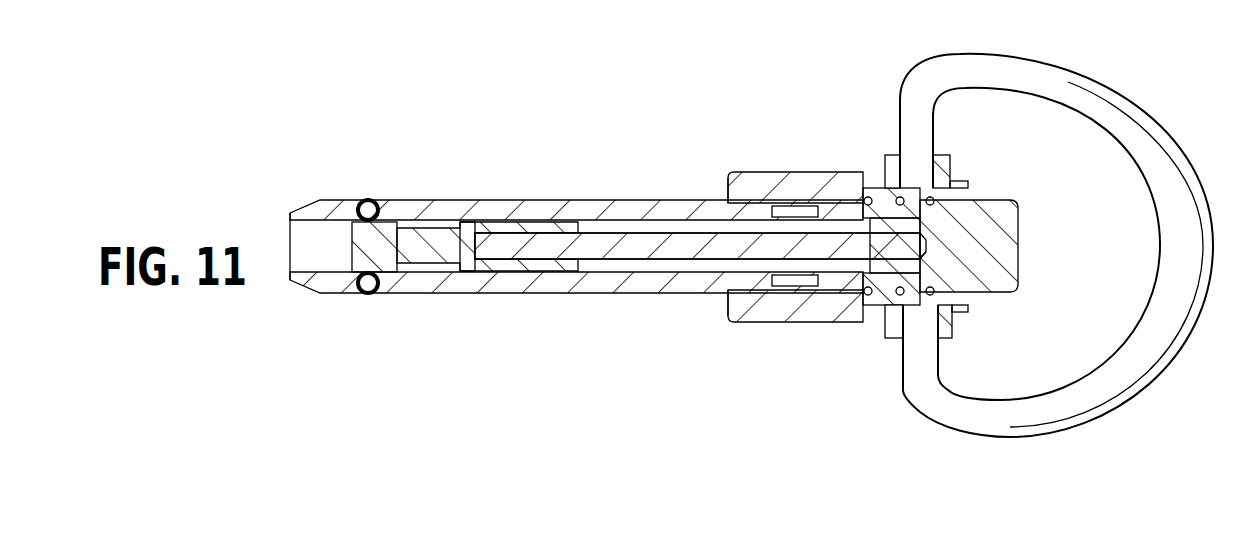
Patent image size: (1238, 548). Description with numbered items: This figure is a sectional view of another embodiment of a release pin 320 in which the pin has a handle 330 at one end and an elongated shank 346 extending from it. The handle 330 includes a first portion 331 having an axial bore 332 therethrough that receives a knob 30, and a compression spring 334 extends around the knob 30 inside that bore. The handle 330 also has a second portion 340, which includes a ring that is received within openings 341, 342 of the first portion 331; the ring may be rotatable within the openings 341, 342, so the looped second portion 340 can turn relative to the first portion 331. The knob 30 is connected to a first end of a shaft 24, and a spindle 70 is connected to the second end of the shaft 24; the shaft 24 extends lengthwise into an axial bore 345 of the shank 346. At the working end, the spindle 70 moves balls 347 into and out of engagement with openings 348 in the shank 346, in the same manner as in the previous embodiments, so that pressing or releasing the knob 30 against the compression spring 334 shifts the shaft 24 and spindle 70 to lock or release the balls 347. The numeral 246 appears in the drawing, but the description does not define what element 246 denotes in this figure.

The shaft 24 is at (595, 243).
The knob 30 is at (1012, 253).
The spindle 70 is at (443, 243).
The plunger flange 246 is at (467, 283).
The pin 320 is at (715, 83).
The handle 330 is at (823, 172).
The first portion 331 is at (737, 172).
The axial bore 332 is at (848, 283).
The compression spring 334 is at (880, 168).
The second portion 340 is at (923, 400).
The opening 341 is at (947, 164).
The opening 342 is at (952, 330).
The axial bore 345 is at (397, 293).
The shank 346 is at (402, 210).
The balls 347 is at (365, 198).
The openings 348 is at (358, 296).